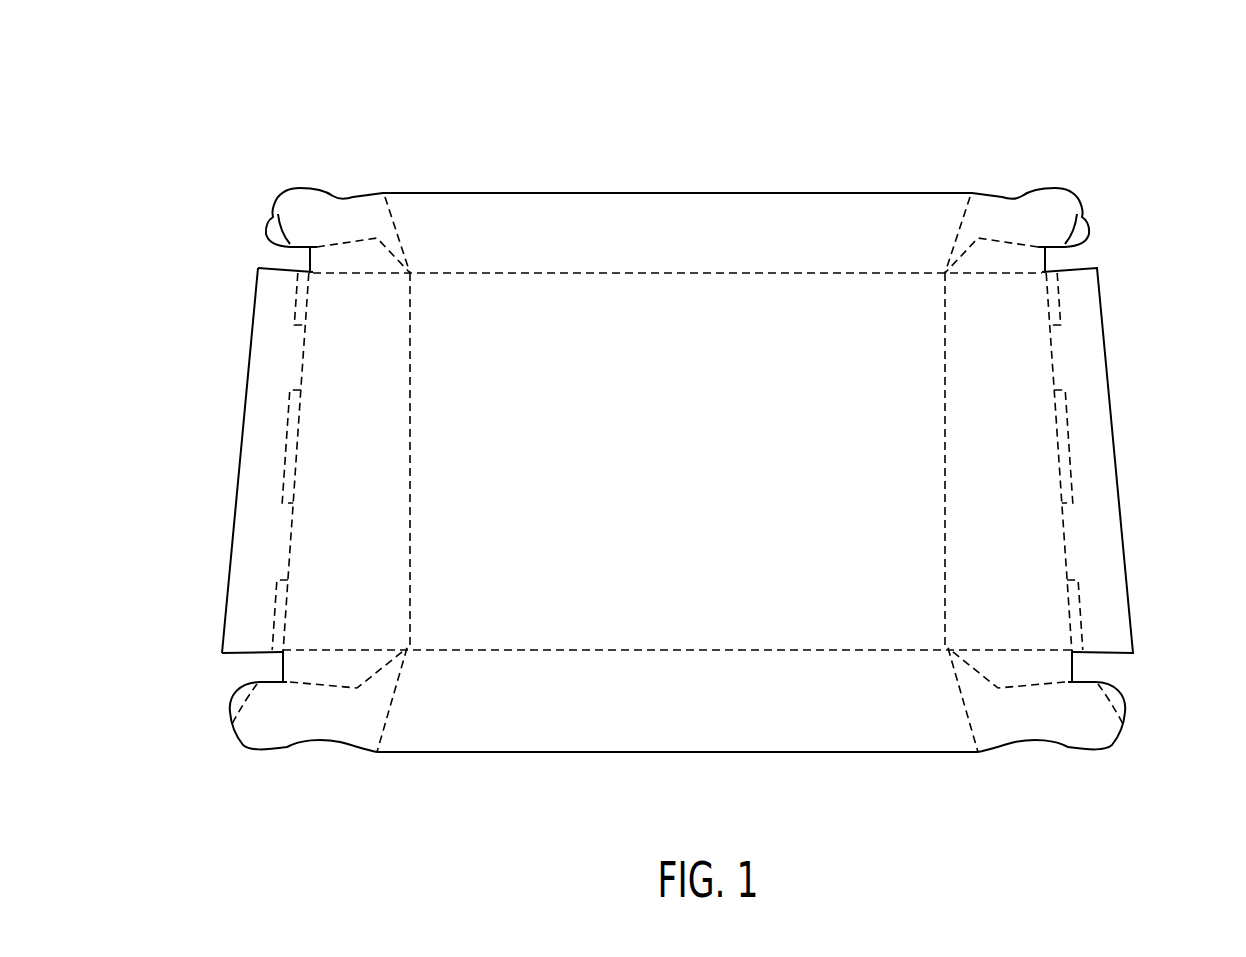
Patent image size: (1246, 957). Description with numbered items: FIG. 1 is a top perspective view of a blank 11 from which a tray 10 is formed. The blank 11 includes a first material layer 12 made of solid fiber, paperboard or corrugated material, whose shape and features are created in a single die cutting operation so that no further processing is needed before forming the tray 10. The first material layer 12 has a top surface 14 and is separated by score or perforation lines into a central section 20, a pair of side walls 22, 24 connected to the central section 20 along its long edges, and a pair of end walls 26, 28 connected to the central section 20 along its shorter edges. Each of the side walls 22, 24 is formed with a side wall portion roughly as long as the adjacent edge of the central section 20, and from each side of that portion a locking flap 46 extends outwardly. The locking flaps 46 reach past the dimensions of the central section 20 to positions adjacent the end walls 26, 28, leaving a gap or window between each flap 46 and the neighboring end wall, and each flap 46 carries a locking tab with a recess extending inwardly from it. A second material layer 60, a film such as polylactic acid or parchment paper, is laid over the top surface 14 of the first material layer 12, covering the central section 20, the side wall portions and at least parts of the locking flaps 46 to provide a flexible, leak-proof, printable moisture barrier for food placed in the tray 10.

The tray 10 is at (667, 440).
The blank 11 is at (468, 180).
The first material layer 12 is at (207, 474).
The top surface 14 is at (268, 305).
The central section 20 is at (661, 500).
The side wall 22 is at (677, 153).
The side wall 24 is at (477, 757).
The end wall 26 is at (235, 477).
The end wall 28 is at (1090, 476).
The locking flap 46 is at (285, 189).
The second material layer 60 is at (307, 667).